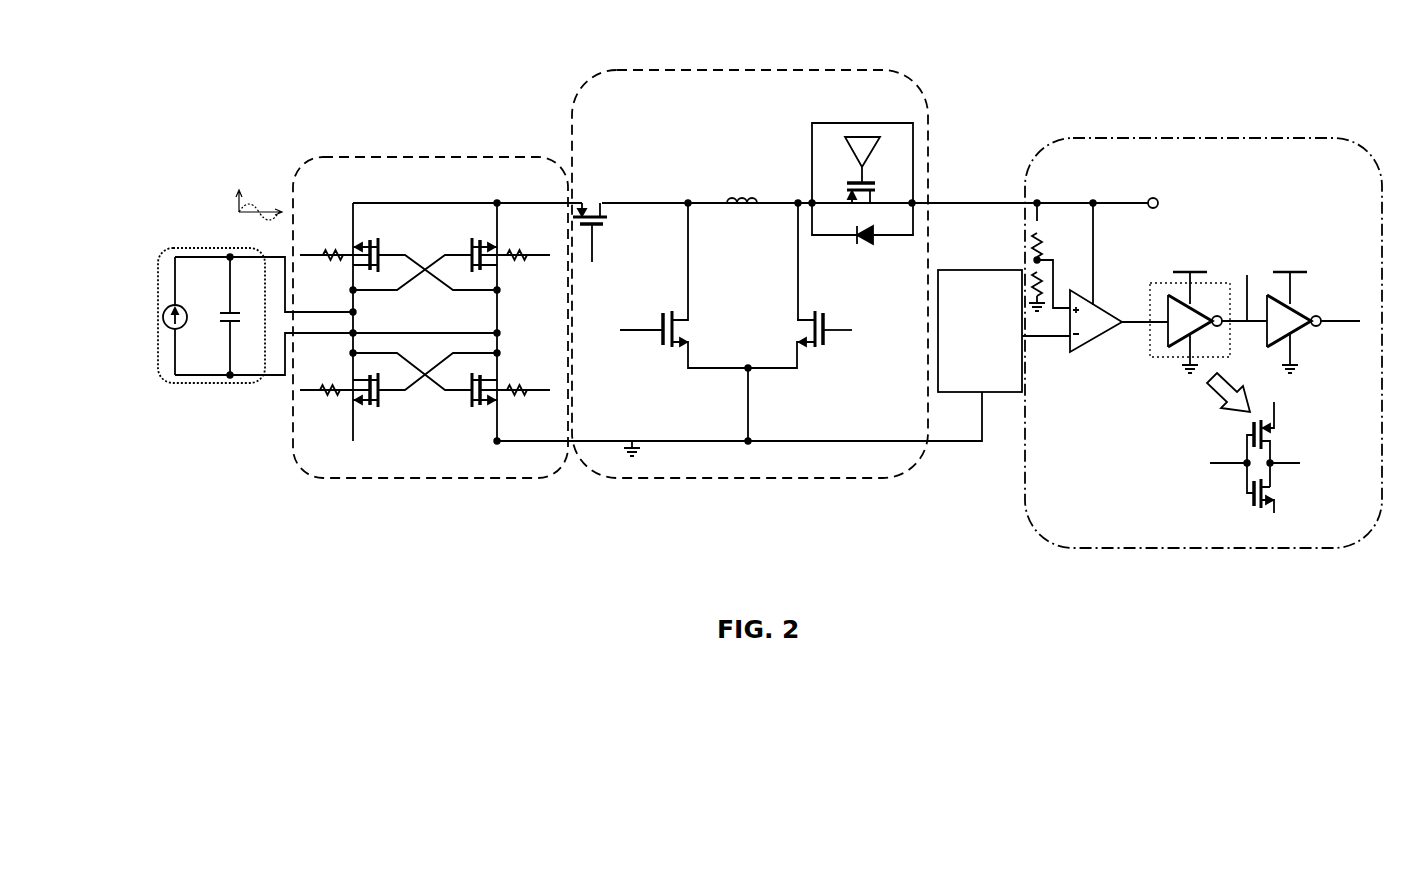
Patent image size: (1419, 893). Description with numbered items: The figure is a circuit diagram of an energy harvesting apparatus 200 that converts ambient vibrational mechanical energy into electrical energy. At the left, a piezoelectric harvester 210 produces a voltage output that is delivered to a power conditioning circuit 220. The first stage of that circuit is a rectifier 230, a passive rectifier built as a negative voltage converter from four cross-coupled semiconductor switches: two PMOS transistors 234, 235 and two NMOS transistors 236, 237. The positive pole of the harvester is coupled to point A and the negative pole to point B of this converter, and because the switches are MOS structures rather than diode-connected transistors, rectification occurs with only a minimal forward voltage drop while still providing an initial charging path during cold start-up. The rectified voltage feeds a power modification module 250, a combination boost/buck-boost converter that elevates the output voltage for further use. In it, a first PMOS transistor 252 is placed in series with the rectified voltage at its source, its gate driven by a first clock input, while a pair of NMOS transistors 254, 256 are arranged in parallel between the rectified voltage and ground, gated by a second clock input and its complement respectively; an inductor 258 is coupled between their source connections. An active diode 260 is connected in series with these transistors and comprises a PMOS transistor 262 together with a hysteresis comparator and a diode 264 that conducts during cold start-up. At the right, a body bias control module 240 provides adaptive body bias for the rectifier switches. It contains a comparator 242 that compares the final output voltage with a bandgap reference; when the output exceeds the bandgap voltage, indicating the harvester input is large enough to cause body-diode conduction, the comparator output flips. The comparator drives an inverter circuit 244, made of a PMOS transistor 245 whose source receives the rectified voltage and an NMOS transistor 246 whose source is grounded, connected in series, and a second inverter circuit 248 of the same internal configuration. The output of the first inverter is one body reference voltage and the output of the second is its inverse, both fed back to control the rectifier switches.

The energy harvesting apparatus 200 is at (478, 101).
The piezoelectric harvester 210 is at (212, 383).
The power conditioning circuit 220 is at (921, 95).
The rectifier 230 is at (312, 170).
The PMOS transistor PM1 234 is at (368, 232).
The PMOS transistor PM2 235 is at (464, 236).
The NMOS transistor NM1 236 is at (362, 405).
The NMOS transistor NM2 237 is at (496, 407).
The body bias control module 240 is at (1148, 138).
The comparator 242 is at (1070, 353).
The inverter circuit 244 is at (1167, 347).
The PMOS transistor 245 is at (1252, 428).
The NMOS transistor 246 is at (1252, 500).
The second inverter circuit 248 is at (1297, 307).
The power modification module 250 is at (727, 466).
The first PMOS transistor 252 is at (592, 212).
The NMOS transistor 254 is at (673, 350).
The NMOS transistor 256 is at (822, 350).
The inductor L 258 is at (752, 198).
The active diode 260 is at (913, 167).
The PMOS transistor 262 is at (876, 187).
The hysteresis comparator and diode 264 is at (862, 133).